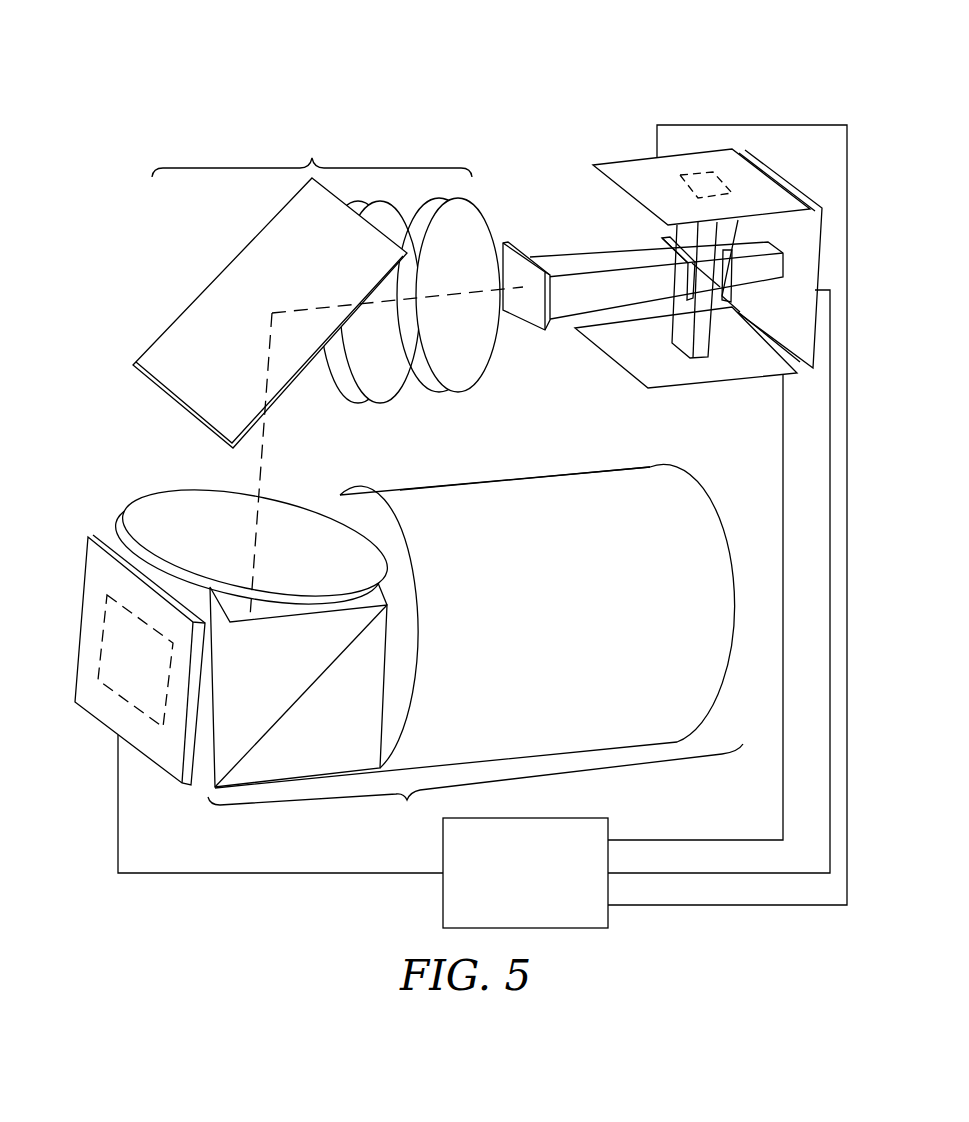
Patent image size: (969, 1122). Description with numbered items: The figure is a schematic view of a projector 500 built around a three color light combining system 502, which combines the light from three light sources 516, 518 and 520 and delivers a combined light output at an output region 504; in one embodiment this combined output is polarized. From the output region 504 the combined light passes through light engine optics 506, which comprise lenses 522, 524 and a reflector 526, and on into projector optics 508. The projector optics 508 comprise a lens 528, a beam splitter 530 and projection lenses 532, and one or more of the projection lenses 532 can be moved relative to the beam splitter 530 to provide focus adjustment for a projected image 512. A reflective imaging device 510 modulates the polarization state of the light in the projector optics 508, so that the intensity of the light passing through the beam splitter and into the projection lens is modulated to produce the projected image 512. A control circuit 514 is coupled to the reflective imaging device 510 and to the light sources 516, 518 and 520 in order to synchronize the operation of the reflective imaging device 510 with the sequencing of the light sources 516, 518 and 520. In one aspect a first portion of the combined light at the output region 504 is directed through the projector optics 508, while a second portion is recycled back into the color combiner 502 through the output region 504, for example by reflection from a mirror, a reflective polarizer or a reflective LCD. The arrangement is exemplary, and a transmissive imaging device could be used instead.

The projector 500 is at (220, 90).
The three color light combining system 502 is at (518, 185).
The output region 504 is at (527, 308).
The light engine optics 506 is at (312, 154).
The projector optics 508 is at (475, 787).
The reflective imaging device 510 is at (92, 717).
The projected image 512 is at (770, 599).
The control circuit 514 is at (518, 817).
The light source 516 is at (793, 163).
The light source 518 is at (678, 387).
The light source 520 is at (627, 160).
The lens 522 is at (468, 390).
The lens 524 is at (377, 398).
The reflector 526 is at (285, 392).
The lens 528 is at (193, 505).
The beam splitter 530 is at (357, 748).
The projection lenses 532 is at (478, 490).